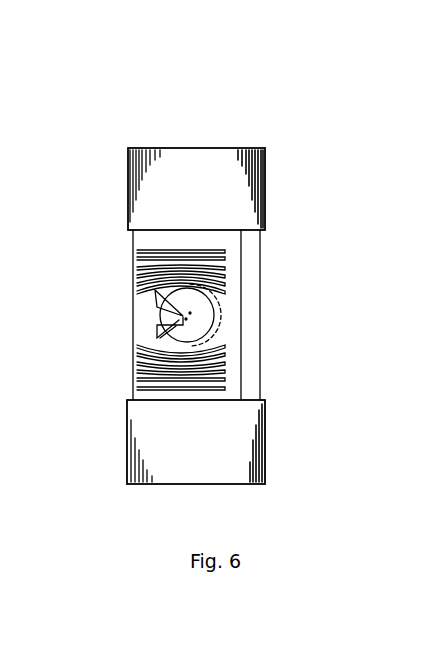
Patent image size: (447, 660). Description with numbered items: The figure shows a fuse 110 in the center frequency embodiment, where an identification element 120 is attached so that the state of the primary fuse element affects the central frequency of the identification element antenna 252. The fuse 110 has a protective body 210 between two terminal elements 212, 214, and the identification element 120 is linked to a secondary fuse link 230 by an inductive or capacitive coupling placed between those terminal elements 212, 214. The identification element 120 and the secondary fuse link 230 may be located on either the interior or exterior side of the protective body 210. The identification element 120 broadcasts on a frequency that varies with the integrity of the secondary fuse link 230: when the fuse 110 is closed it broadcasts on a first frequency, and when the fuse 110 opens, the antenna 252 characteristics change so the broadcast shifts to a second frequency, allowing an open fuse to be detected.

The fuse 110 is at (204, 309).
The identification element 120 is at (138, 312).
The protective body 210 is at (260, 380).
The terminal element 212 is at (265, 190).
The terminal element 214 is at (265, 433).
The secondary fuse link 230 is at (260, 268).
The antenna 252 is at (152, 258).